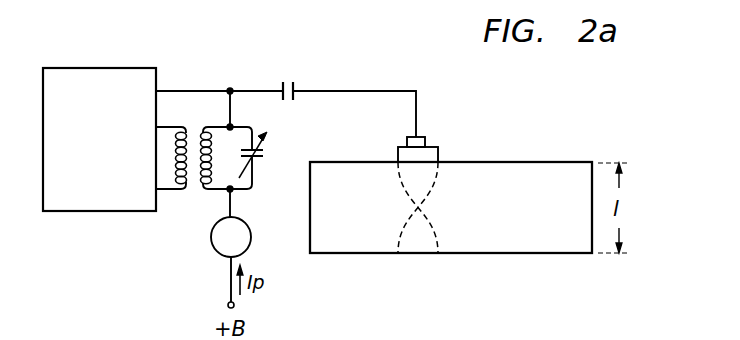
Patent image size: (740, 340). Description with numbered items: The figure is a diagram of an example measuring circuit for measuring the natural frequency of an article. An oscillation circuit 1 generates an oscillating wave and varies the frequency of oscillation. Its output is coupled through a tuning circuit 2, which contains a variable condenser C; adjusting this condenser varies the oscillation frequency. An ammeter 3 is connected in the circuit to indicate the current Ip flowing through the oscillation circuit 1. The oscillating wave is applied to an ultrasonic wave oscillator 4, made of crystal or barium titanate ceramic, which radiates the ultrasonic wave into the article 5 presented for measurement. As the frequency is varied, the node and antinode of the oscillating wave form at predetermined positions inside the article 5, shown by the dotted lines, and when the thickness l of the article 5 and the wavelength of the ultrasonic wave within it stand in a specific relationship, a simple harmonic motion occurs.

The oscillation circuit 1 is at (110, 67).
The tuning circuit 2 is at (239, 126).
The ammeter 3 is at (211, 243).
The ultrasonic wave oscillator 4 is at (432, 147).
The article 5 is at (538, 163).